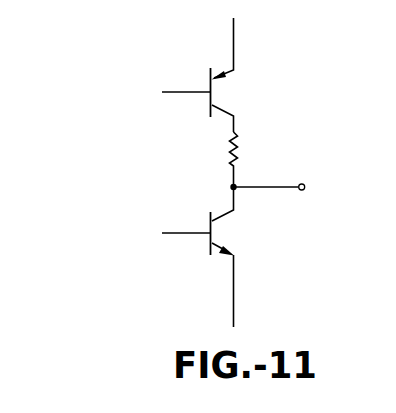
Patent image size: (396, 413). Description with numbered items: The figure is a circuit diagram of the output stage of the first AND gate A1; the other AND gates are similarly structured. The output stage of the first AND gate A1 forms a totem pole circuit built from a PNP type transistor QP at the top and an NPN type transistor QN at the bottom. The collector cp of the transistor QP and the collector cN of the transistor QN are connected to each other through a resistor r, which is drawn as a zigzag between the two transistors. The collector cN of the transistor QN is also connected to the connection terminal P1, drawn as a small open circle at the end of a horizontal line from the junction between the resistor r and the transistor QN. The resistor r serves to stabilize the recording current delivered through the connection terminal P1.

The first AND gate A1 is at (124, 102).
The PNP type transistor QP is at (207, 79).
The collector of transistor QP cp is at (224, 108).
The resistor r is at (227, 153).
The connection terminal P1 is at (302, 184).
The collector of transistor QN cN is at (227, 212).
The NPN type transistor QN is at (210, 242).